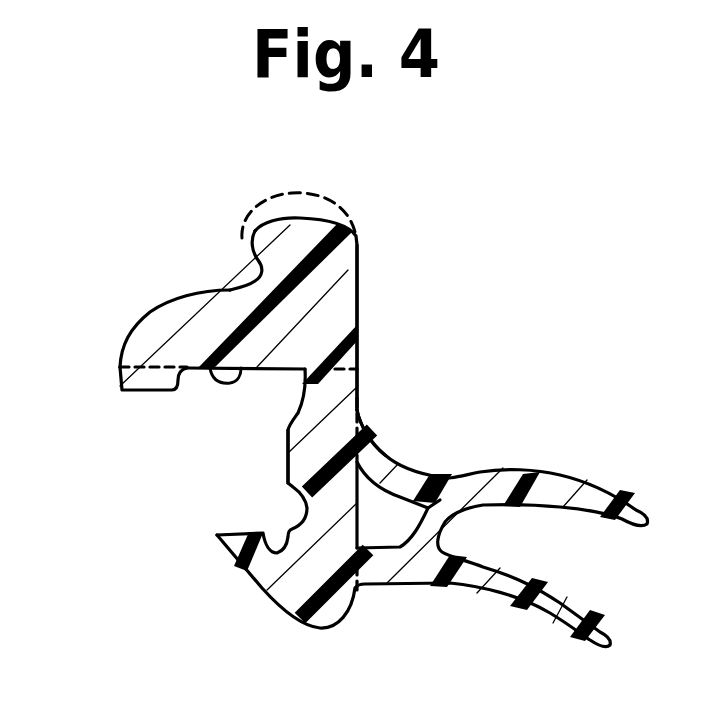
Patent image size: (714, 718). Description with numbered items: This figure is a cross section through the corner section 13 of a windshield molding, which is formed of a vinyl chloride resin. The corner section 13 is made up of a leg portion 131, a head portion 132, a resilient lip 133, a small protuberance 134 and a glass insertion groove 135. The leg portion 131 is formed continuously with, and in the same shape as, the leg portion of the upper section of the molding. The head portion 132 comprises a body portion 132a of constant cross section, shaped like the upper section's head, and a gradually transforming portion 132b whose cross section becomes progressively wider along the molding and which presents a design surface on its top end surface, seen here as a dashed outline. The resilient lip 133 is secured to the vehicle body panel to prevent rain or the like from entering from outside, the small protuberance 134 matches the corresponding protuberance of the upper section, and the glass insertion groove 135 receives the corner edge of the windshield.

The corner section 13 is at (392, 262).
The leg portion 131 is at (300, 471).
The head portion 132 is at (248, 296).
The body portion 132a is at (337, 316).
The gradually transforming portion 132b is at (341, 251).
The resilient lip 133 is at (497, 483).
The small protuberance 134 is at (152, 378).
The glass insertion groove 135 is at (210, 368).